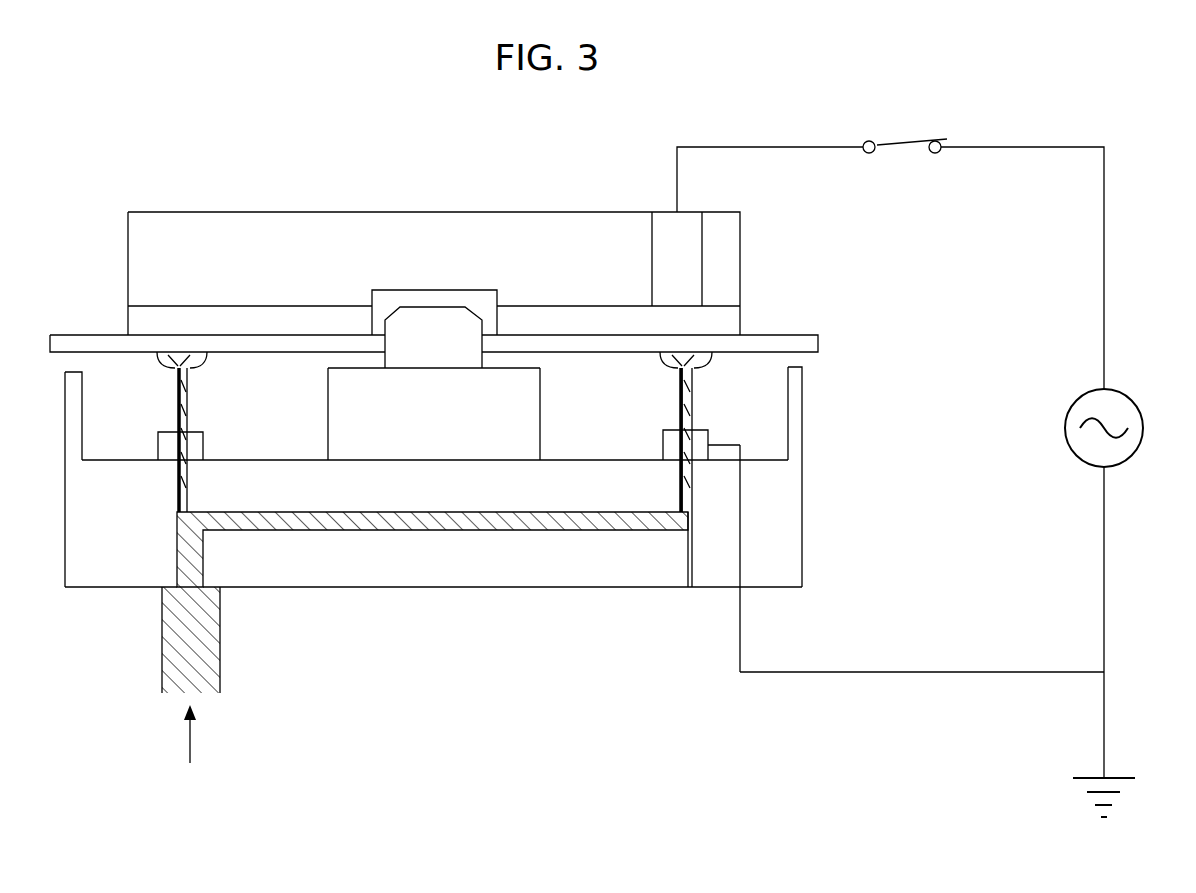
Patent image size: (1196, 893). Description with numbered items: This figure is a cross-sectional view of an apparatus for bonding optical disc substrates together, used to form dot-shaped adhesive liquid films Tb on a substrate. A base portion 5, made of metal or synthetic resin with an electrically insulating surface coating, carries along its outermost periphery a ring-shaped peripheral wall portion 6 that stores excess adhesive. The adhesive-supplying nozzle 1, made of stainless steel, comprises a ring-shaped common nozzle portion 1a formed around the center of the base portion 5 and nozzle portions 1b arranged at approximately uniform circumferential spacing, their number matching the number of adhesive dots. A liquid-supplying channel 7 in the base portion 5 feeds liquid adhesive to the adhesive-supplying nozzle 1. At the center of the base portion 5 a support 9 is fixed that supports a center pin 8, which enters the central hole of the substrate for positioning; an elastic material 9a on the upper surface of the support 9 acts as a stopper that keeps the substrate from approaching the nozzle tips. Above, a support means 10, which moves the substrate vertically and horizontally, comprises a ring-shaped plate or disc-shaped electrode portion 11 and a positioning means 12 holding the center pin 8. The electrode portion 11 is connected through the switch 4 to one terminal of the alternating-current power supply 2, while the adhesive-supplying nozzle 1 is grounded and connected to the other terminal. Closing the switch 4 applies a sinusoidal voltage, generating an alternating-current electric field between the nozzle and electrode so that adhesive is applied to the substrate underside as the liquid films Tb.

The adhesive-supplying nozzle 1 is at (148, 381).
The common nozzle portion 1a is at (198, 447).
The nozzle portions 1b is at (188, 388).
The alternating-current power supply 2 is at (1132, 455).
The switch 4 is at (915, 142).
The base portion 5 is at (793, 562).
The peripheral wall portion 6 is at (797, 390).
The liquid-supplying channel 7 is at (340, 527).
The center pin 8 is at (447, 323).
The support 9 is at (468, 433).
The elastic material 9a is at (352, 363).
The support means 10 is at (433, 200).
The electrode portion 11 is at (665, 222).
The positioning means 12 is at (382, 297).
The dot-shaped adhesive liquid films Tb is at (700, 354).